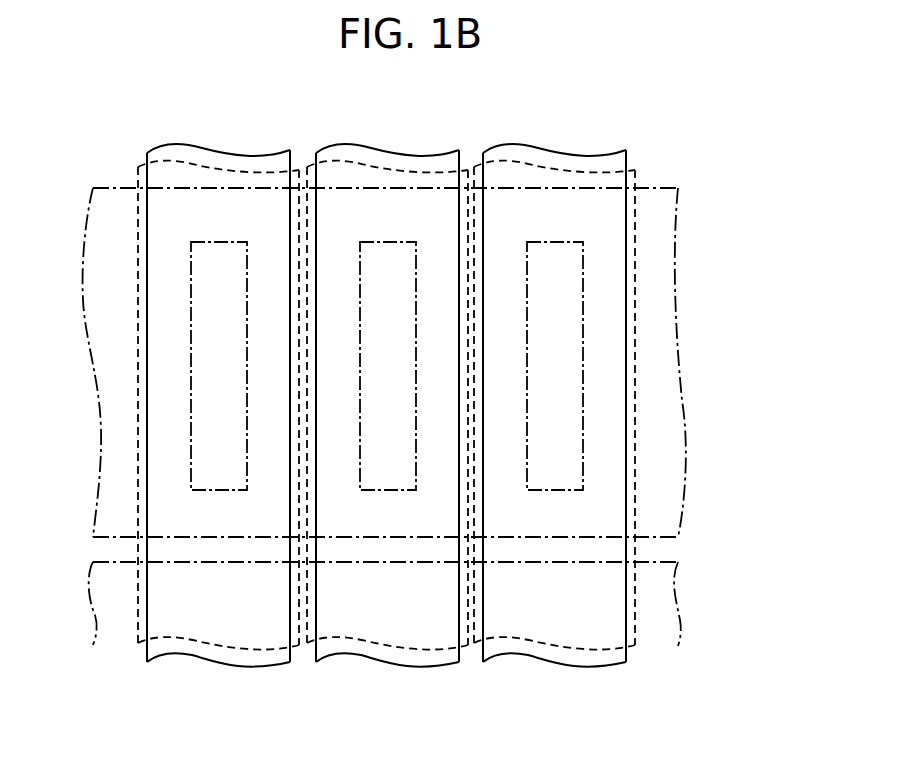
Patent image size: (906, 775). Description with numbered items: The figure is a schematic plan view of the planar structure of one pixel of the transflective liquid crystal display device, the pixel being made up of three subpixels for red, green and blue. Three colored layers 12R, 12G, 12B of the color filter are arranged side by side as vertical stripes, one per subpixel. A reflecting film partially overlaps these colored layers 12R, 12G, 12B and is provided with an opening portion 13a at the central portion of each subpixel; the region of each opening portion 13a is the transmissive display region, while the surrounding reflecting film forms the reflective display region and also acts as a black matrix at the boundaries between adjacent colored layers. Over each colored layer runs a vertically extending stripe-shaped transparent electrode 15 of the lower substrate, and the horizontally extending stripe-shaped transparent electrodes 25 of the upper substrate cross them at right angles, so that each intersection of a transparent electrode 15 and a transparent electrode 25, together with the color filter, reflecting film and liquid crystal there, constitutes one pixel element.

The colored layer 12R is at (250, 171).
The colored layer 12G is at (419, 171).
The colored layer 12B is at (586, 171).
The opening portion 13a is at (192, 270).
The transparent electrode 15 is at (221, 657).
The transparent electrode 25 is at (668, 376).